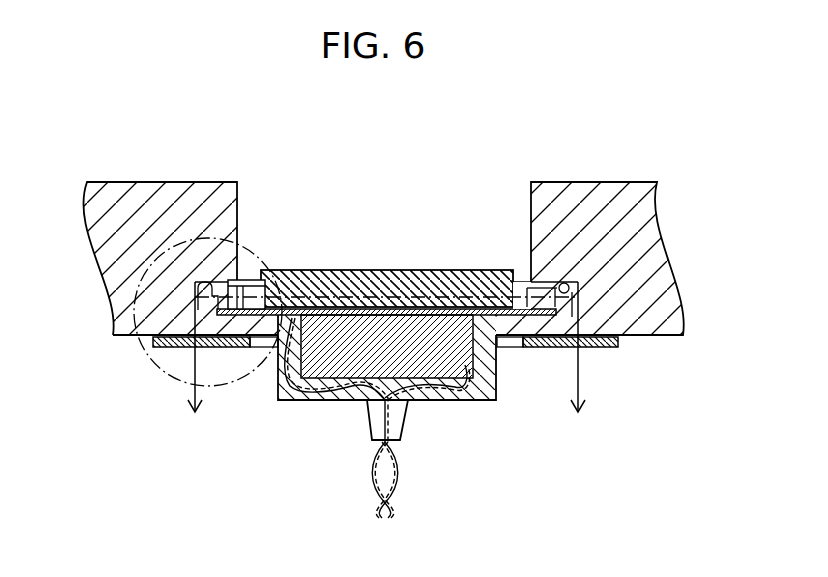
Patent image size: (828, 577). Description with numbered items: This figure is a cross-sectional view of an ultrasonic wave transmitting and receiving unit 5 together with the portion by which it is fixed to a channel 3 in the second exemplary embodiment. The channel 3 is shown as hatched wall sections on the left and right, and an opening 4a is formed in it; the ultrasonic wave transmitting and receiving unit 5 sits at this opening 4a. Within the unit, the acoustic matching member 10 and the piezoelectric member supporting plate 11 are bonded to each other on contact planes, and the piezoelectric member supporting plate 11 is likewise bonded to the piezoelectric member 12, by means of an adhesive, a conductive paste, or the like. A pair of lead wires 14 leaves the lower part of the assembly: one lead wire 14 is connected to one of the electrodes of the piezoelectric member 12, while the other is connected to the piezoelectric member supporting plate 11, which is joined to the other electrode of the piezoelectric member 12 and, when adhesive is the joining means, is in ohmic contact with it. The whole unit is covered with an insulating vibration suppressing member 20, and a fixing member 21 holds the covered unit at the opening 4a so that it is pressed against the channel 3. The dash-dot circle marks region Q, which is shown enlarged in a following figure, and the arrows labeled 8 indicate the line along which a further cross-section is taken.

The channel 3 is at (607, 182).
The opening 4a is at (461, 218).
The ultrasonic wave transmitting and receiving unit 5 is at (389, 270).
The acoustic matching member 10 is at (318, 270).
The piezoelectric member supporting plate 11 is at (505, 316).
The piezoelectric member 12 is at (467, 400).
The lead wires 14 is at (398, 468).
The insulating vibration suppressing member 20 is at (277, 396).
The fixing member 21 is at (605, 348).
The line 8- 8 is at (387, 366).
The region Q is at (247, 245).